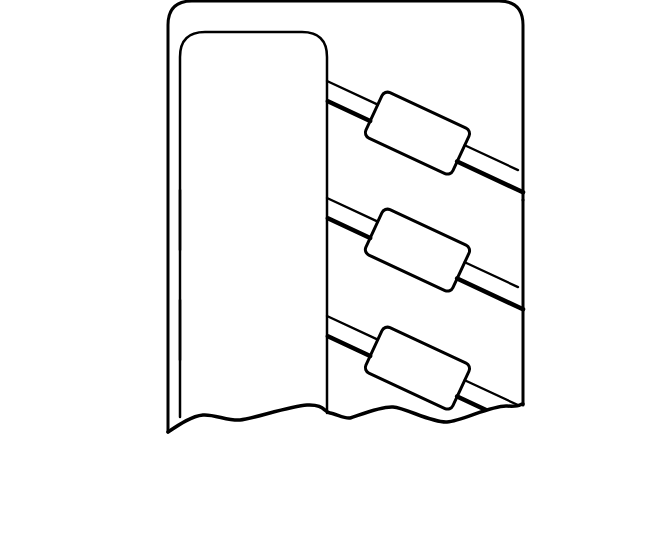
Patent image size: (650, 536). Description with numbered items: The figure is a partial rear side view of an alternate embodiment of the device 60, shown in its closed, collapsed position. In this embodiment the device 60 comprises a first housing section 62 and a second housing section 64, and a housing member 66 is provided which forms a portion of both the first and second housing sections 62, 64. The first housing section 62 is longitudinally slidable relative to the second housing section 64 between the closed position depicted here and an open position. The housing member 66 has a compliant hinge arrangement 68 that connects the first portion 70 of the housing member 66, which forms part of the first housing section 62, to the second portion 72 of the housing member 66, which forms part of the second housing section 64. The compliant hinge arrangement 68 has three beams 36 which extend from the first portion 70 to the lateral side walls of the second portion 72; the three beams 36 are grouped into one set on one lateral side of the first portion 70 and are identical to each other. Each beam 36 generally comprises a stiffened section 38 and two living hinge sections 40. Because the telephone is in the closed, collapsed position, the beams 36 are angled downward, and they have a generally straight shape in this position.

The device 60 is at (126, 56).
The first portion 70 is at (190, 137).
The first housing section 62 is at (192, 228).
The housing member 66 is at (195, 310).
The living hinge sections 40 is at (345, 85).
The stiffened section 38 is at (410, 108).
The beams 36 is at (452, 118).
The second portion 72 is at (523, 117).
The second housing section 64 is at (523, 230).
The compliant hinge arrangement 68 is at (513, 283).